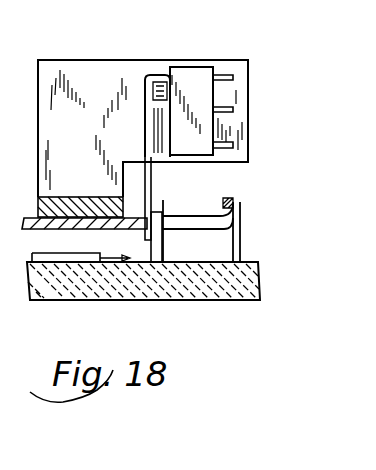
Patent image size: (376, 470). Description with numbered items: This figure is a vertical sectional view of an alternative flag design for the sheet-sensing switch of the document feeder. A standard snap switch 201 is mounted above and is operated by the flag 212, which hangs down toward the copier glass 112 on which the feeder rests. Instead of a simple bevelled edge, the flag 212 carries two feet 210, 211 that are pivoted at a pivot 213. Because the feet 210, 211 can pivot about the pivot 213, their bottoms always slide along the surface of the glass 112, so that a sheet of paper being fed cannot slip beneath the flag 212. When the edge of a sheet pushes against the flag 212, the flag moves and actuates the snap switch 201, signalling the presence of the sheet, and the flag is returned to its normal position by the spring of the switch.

The snap switch 201 is at (193, 77).
The flag 212 is at (145, 118).
The pivot 213 is at (181, 215).
The foot 211 is at (163, 247).
The foot 210 is at (147, 264).
The copier glass 112 is at (237, 285).